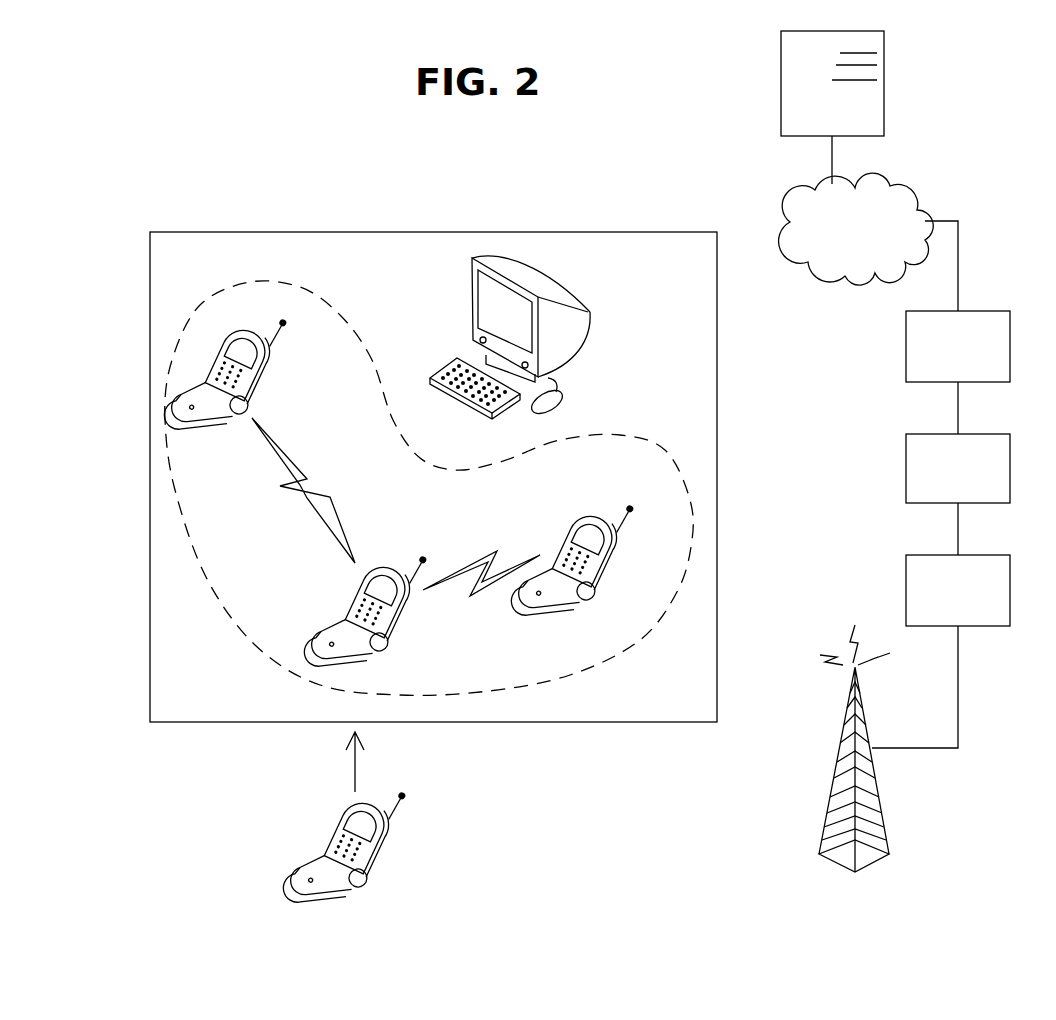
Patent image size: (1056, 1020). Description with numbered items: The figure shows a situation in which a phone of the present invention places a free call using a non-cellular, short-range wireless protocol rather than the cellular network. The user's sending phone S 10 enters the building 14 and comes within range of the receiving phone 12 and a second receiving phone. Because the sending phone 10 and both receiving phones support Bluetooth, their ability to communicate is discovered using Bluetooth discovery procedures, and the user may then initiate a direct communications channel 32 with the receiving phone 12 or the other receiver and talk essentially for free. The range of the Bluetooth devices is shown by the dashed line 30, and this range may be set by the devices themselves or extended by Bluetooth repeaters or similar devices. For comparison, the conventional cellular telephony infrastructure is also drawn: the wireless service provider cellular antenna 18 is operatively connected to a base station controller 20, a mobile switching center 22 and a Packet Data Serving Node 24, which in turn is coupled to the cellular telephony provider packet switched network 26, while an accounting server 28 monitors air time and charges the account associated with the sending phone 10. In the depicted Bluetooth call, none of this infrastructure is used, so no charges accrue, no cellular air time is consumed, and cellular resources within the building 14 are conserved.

The sending phone S 10 is at (310, 862).
The receiving phone R1 12 is at (567, 613).
The building 14 is at (250, 723).
The wireless service provider cellular antenna 18 is at (883, 826).
The base station controller 20 is at (1010, 589).
The mobile switching center 22 is at (1010, 467).
The Packet Data Serving Node 24 is at (1010, 345).
The cellular telephony provider packet switched network 26 is at (845, 278).
The accounting server 28 is at (884, 76).
The dashed line 30 is at (313, 295).
The direct communications channel 32 is at (490, 552).